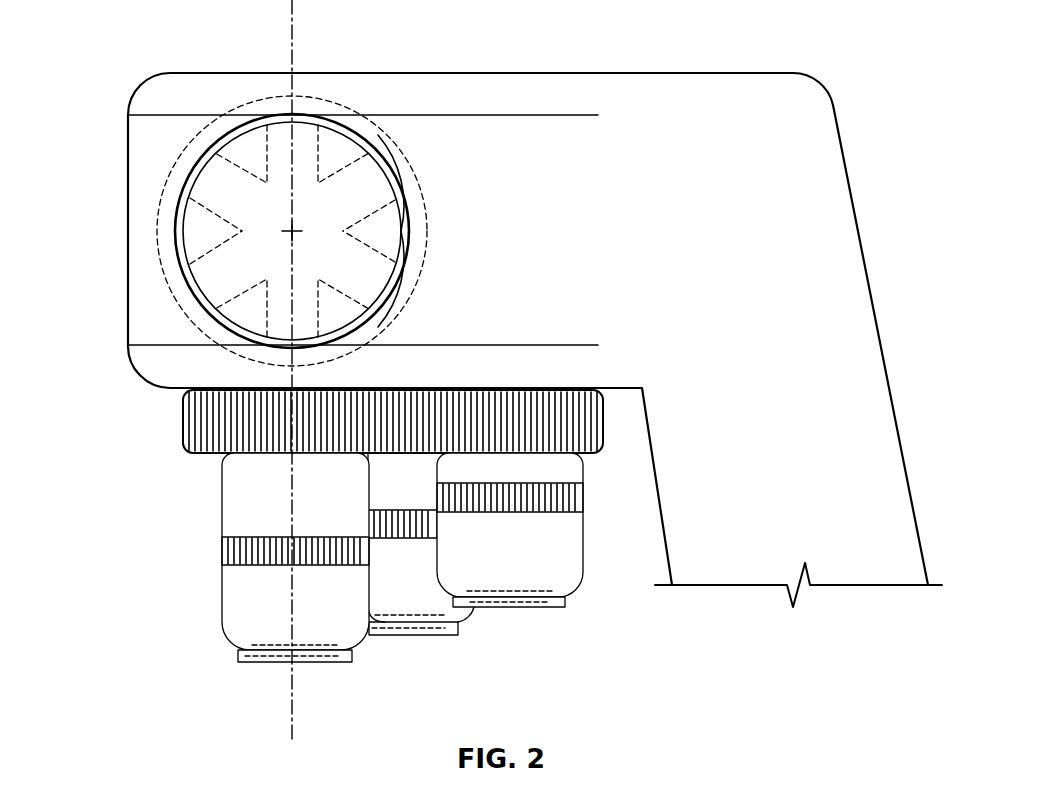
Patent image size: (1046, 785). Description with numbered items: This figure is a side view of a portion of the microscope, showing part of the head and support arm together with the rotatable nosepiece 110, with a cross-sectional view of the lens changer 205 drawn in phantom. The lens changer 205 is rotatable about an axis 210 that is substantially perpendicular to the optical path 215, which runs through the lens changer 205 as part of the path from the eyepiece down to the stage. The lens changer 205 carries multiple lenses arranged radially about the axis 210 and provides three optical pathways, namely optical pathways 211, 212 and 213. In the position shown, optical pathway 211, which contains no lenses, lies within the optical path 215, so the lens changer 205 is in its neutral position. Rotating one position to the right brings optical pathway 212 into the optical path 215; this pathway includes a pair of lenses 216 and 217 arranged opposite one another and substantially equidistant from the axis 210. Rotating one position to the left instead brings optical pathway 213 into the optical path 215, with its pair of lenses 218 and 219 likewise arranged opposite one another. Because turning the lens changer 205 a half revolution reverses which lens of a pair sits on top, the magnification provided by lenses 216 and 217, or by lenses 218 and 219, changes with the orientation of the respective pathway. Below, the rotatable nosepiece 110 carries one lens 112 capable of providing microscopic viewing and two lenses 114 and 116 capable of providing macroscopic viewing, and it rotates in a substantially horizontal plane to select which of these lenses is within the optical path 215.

The nosepiece 110 is at (167, 457).
The lens 112 is at (267, 653).
The lens 114 is at (407, 625).
The lens 116 is at (520, 598).
The lens changer 205 is at (430, 228).
The axis 210 is at (290, 233).
The optical pathway 211 is at (305, 128).
The optical pathway 212 is at (377, 182).
The optical pathway 213 is at (372, 270).
The optical path 215 is at (293, 25).
The lens 216 is at (405, 173).
The lens 217 is at (178, 286).
The lens 218 is at (178, 177).
The lens 219 is at (387, 312).